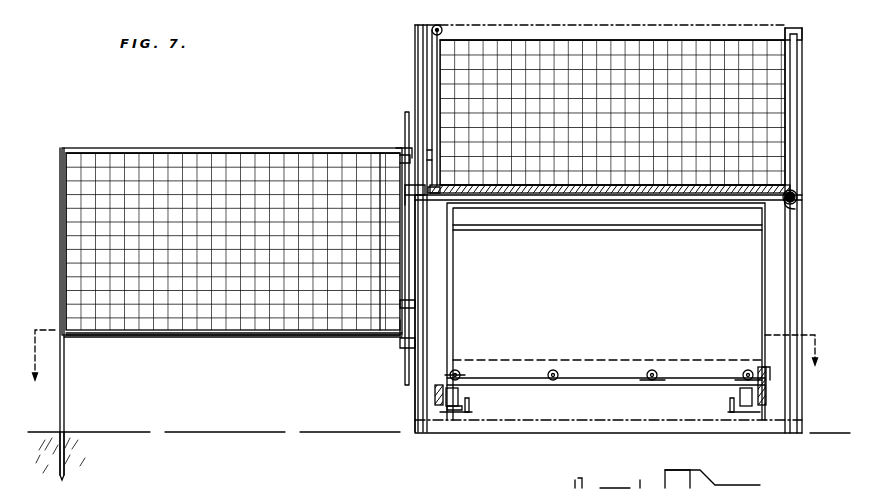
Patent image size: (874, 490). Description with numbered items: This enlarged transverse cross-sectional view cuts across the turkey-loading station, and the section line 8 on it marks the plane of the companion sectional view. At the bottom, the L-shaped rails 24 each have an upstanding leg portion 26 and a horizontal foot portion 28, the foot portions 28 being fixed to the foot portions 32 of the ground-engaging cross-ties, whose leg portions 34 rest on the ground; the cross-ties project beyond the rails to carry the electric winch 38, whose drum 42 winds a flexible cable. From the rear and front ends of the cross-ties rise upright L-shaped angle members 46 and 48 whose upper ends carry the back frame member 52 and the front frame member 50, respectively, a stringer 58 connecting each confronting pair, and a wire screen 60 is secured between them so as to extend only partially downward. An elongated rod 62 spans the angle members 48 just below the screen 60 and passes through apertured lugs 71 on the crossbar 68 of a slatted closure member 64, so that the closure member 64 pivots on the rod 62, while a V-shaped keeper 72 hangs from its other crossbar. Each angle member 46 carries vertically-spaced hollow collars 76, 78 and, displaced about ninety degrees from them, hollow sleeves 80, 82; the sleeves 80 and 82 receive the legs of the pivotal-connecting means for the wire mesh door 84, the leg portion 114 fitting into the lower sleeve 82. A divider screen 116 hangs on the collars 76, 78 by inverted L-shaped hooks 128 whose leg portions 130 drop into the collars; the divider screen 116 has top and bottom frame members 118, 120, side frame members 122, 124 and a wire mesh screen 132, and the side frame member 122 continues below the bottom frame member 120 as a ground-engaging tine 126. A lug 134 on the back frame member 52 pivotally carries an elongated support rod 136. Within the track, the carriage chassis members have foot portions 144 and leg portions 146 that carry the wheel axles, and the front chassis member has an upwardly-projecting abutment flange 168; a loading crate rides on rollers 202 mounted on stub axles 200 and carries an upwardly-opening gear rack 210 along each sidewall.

The section line of FIG. 8 is at (432, 355).
The L-shaped rail 24 is at (468, 419).
The upstanding leg portion 26 is at (468, 415).
The horizontal foot portion 28 is at (455, 422).
The foot portion of cross-tie 32 is at (555, 425).
The leg portion of cross-tie 34 is at (590, 432).
The electric winch 38 is at (683, 486).
The drum 42 is at (572, 488).
The upright L-shaped angle member 46 is at (415, 100).
The L-shaped angle member 48 is at (805, 112).
The front frame member 50 is at (797, 28).
The back frame member 52 is at (415, 24).
The stringer 58 is at (704, 30).
The wire screen 60 is at (628, 42).
The elongated rod 62 is at (796, 194).
The closure member 64 is at (640, 183).
The crossbar 68 is at (796, 206).
The apertured lug 71 is at (794, 190).
The V-shaped keeper 72 is at (432, 200).
The hollow collar 76 is at (395, 153).
The hollow collar 78 is at (440, 188).
The hollow sleeve 80 is at (400, 205).
The hollow sleeve 82 is at (398, 292).
The wire mesh door 84 is at (405, 250).
The leg portion 114 is at (407, 383).
The divider screen 116 is at (267, 150).
The top frame member 118 is at (194, 149).
The bottom frame member 120 is at (175, 338).
The side frame member 122 is at (60, 253).
The side frame member 124 is at (398, 333).
The ground-engaging tine 126 is at (63, 408).
The inverted L-shaped hook 128 is at (430, 150).
The leg portion of hook 130 is at (405, 172).
The wire mesh screen 132 is at (268, 318).
The inwardly-projecting lug 134 is at (441, 27).
The elongated support rod 136 is at (432, 72).
The foot portion 144 is at (462, 372).
The leg portion 146 is at (435, 395).
The abutment flange 168 is at (770, 376).
The stub axle 200 is at (440, 402).
The roller 202 is at (655, 382).
The gear rack 210 is at (600, 232).